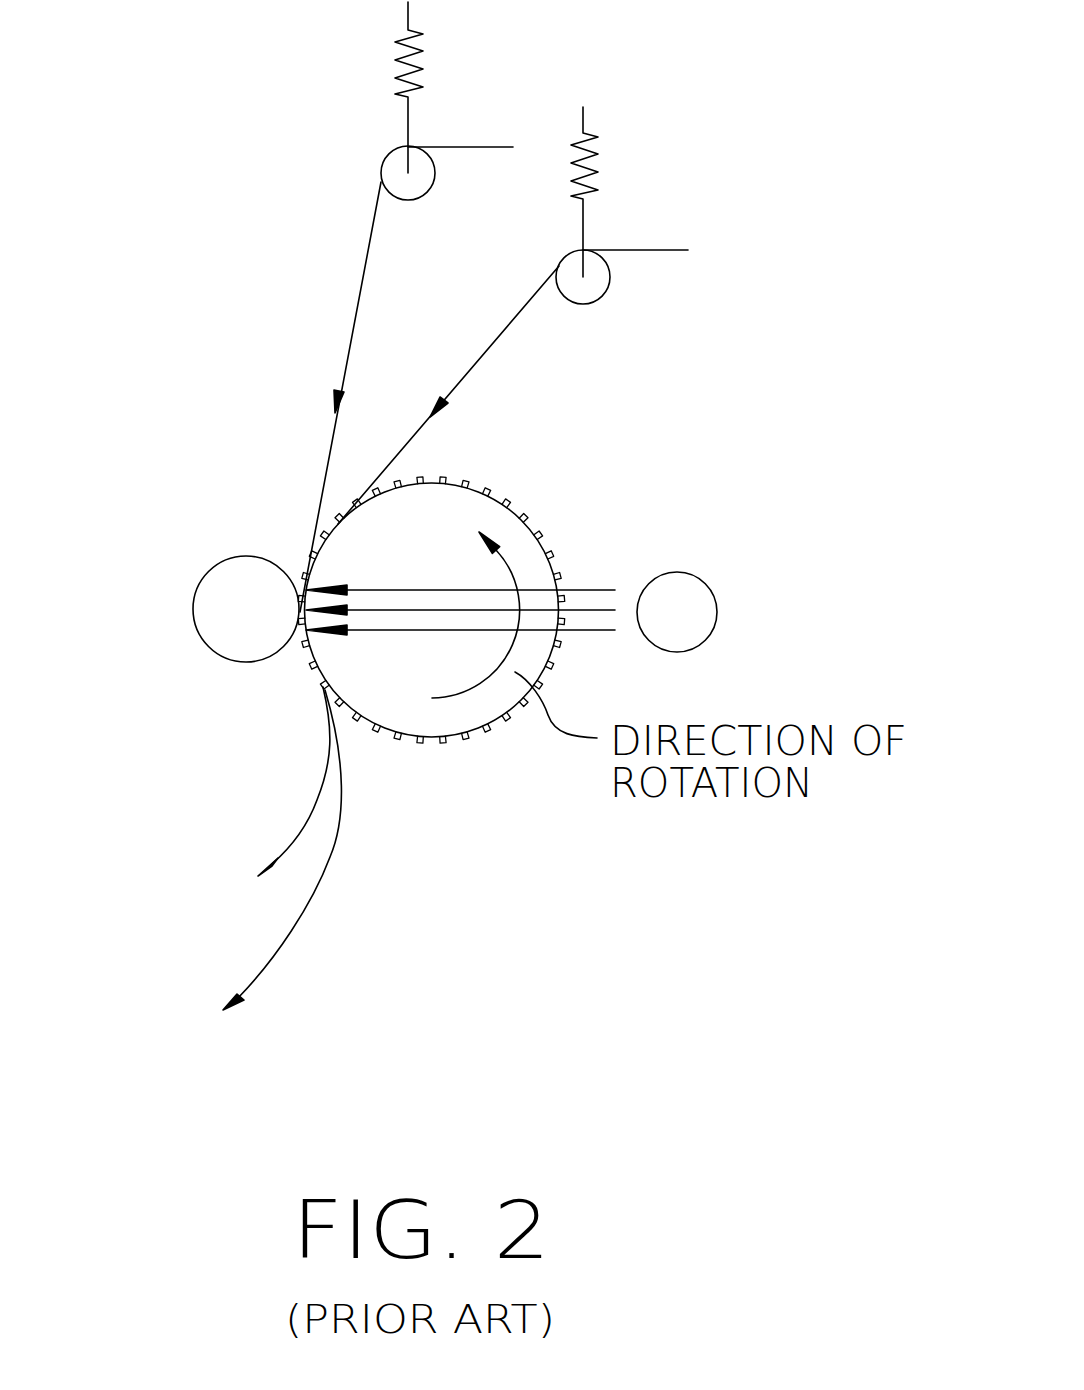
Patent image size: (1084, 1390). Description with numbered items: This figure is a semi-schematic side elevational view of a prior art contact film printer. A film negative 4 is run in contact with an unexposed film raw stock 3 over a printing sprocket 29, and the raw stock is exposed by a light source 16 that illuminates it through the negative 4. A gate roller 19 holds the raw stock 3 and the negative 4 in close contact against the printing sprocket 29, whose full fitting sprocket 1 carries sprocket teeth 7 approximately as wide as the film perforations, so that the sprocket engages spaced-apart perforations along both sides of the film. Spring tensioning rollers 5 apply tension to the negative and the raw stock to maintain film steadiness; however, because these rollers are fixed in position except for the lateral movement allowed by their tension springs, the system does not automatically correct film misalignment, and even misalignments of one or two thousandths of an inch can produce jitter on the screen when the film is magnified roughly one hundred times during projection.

The full fitting sprocket 1 is at (377, 557).
The film raw stock 3 is at (347, 355).
The film negative 4 is at (473, 365).
The spring tensioning rollers 5 is at (433, 165).
The sprocket teeth 7 is at (432, 740).
The light source 16 is at (713, 593).
The gate roller 19 is at (223, 657).
The printing sprocket 29 is at (570, 498).